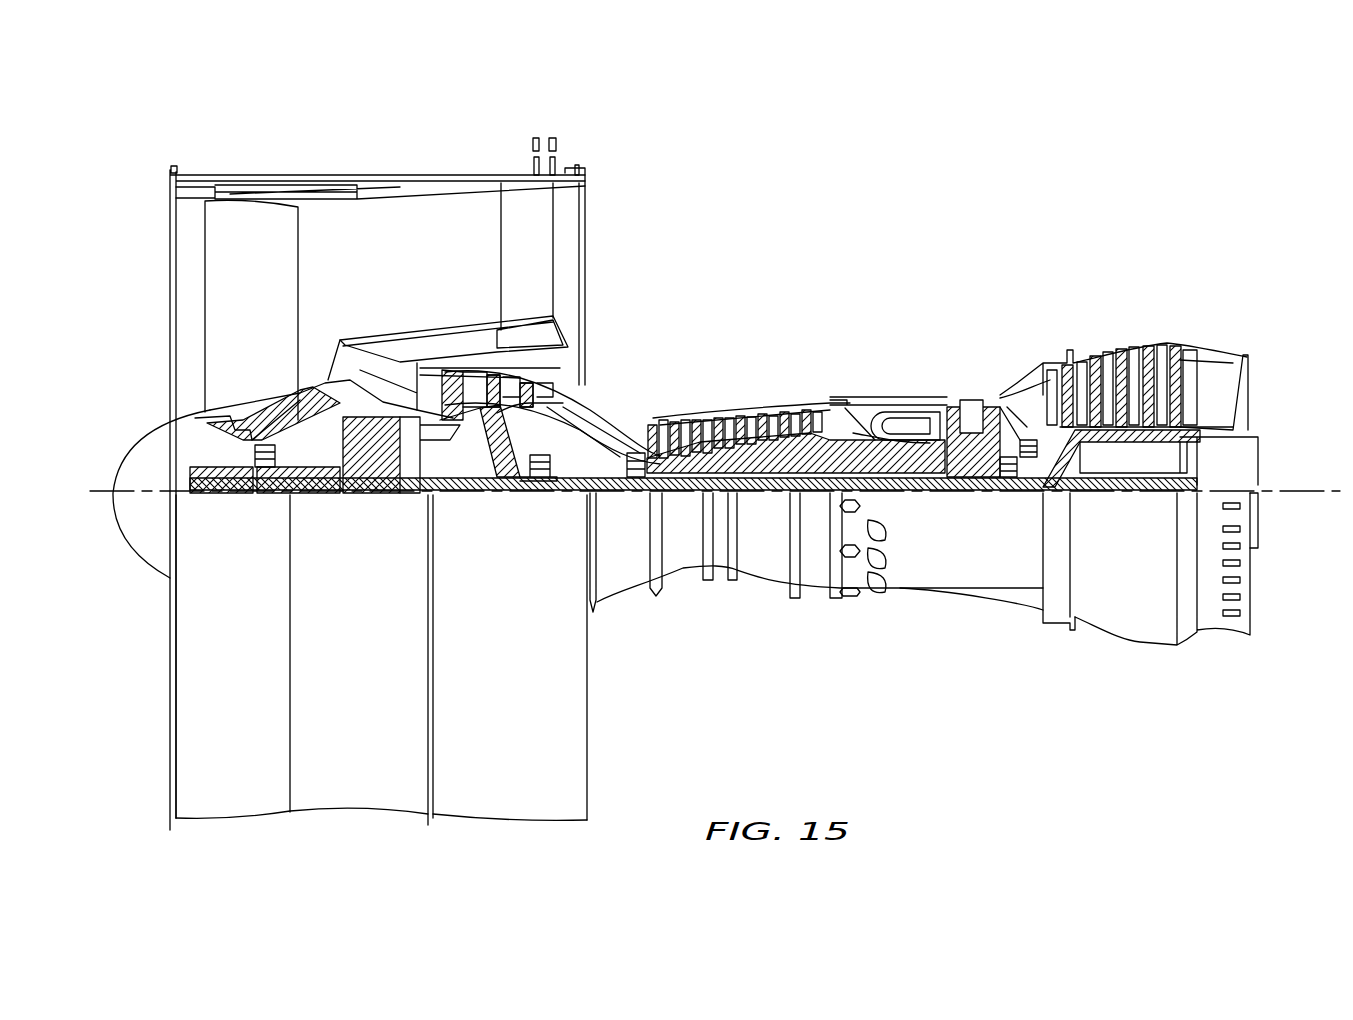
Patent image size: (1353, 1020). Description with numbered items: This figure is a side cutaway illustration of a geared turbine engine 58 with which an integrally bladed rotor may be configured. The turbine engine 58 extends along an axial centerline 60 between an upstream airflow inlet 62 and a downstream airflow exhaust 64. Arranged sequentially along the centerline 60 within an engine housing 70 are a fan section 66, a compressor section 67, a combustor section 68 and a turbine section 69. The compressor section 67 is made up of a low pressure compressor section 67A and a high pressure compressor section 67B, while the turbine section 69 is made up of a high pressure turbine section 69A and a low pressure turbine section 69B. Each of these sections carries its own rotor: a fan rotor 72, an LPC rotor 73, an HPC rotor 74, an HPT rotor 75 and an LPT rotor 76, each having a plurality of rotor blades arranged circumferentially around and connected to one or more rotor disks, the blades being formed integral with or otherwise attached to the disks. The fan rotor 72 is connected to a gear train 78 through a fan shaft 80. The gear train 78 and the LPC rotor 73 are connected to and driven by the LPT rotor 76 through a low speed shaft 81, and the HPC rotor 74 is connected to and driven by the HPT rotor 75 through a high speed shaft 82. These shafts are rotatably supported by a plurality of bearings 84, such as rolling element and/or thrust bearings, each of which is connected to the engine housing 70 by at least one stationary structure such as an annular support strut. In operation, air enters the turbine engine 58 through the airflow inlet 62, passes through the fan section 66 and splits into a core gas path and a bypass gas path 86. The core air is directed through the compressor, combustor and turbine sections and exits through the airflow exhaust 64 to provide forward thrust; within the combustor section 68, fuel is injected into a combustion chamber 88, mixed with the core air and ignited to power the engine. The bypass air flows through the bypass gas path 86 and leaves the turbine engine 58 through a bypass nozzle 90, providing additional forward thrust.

The geared turbine engine 58 is at (142, 160).
The axial centerline 60 is at (1323, 491).
The airflow inlet 62 is at (172, 250).
The airflow exhaust 64 is at (1249, 386).
The fan section 66 is at (345, 152).
The compressor section 67 is at (812, 90).
The low pressure compressor section 67A is at (590, 140).
The high pressure compressor section 67B is at (812, 328).
The combustor section 68 is at (938, 328).
The turbine section 69 is at (1200, 260).
The high pressure turbine section 69A is at (1020, 328).
The low pressure turbine section 69B is at (1200, 328).
The engine housing 70 is at (1146, 644).
The fan rotor 72 is at (202, 412).
The LPC rotor 73 is at (492, 480).
The HPC rotor 74 is at (760, 470).
The HPT rotor 75 is at (970, 490).
The LPT rotor 76 is at (1120, 440).
The gear train 78 is at (386, 495).
The fan shaft 80 is at (240, 493).
The low speed shaft 81 is at (590, 500).
The high speed shaft 82 is at (900, 478).
The bearings 84 is at (602, 412).
The bypass gas path 86 is at (434, 267).
The combustion chamber 88 is at (893, 420).
The bypass nozzle 90 is at (585, 238).